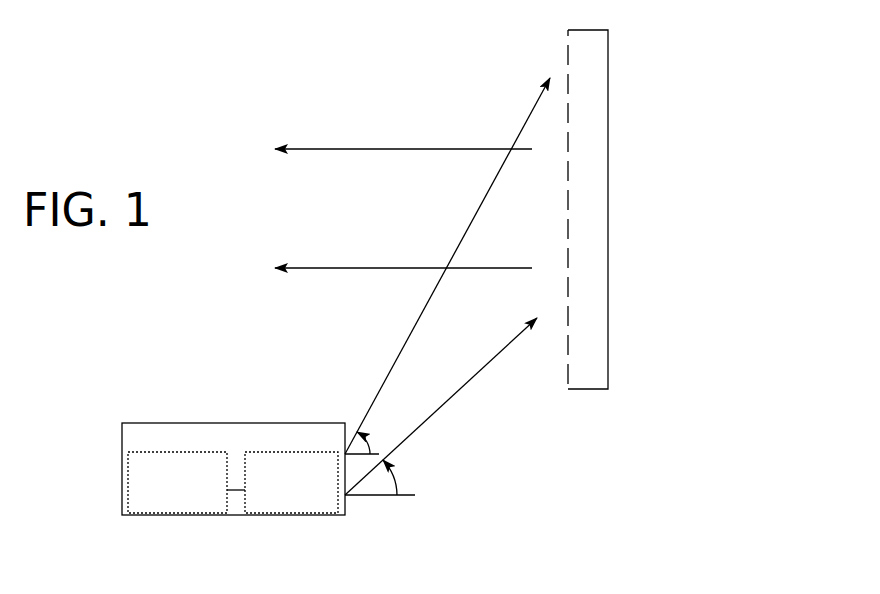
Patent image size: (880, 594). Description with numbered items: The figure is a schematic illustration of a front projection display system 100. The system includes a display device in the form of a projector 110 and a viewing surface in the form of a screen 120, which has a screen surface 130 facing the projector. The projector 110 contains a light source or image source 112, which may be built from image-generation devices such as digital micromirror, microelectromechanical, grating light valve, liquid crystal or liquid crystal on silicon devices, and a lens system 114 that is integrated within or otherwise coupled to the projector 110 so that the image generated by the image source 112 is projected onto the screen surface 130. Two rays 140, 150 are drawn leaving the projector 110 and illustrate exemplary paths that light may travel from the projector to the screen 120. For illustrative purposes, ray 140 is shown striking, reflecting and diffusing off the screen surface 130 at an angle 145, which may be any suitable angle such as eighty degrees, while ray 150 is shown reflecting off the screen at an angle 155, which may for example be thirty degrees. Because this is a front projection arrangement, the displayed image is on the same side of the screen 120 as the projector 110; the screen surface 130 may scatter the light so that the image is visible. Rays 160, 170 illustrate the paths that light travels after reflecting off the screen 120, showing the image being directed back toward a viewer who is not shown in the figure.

The front projection display system 100 is at (652, 135).
The projector 110 is at (223, 483).
The image source 112 is at (182, 515).
The lens system 114 is at (298, 515).
The screen 120 is at (576, 200).
The screen surface 130 is at (567, 57).
The ray 140 is at (390, 367).
The angle 145 is at (370, 440).
The ray 150 is at (447, 403).
The angle 155 is at (397, 485).
The ray 160 is at (403, 138).
The ray 170 is at (403, 258).